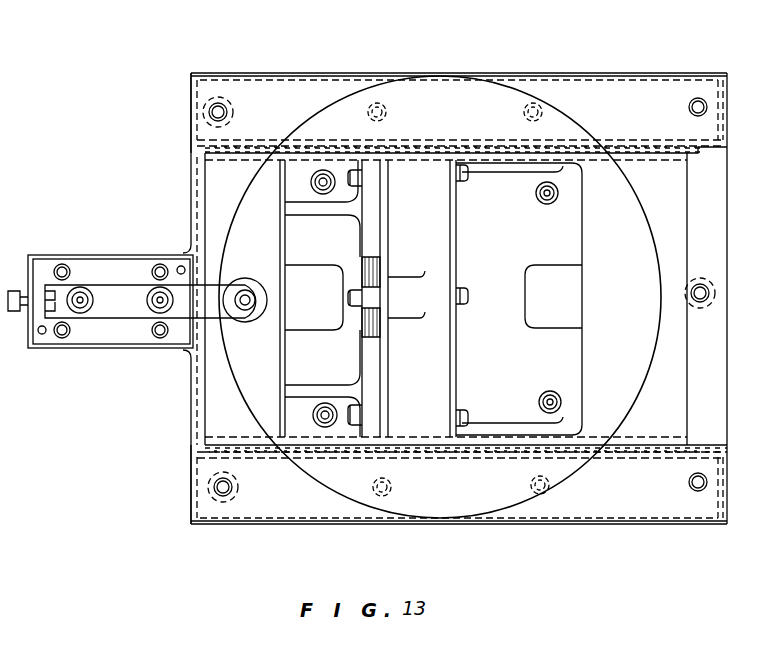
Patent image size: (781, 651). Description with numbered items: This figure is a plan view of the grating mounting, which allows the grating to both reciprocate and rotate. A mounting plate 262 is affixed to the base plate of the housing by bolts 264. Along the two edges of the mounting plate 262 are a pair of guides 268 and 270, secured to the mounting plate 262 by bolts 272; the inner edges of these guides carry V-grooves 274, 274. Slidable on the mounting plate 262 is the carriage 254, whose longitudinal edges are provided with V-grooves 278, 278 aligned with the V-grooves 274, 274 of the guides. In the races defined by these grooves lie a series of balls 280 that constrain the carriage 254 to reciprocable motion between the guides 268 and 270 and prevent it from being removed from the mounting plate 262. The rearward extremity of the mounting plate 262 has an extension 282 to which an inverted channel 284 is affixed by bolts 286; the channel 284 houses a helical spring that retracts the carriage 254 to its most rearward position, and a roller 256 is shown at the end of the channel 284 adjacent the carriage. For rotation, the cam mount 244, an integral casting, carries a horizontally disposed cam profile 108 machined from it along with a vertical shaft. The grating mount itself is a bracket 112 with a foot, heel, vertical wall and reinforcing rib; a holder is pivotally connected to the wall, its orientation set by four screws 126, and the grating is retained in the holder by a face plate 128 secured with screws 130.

The cam profile 108 is at (262, 348).
The bracket 112 is at (362, 357).
The screws 126 is at (356, 186).
The face plate 128 is at (457, 362).
The screws 130 is at (468, 175).
The cam mount 244 is at (616, 280).
The carriage 254 is at (212, 190).
The roller 256 is at (244, 278).
The mounting plate 262 is at (191, 406).
The bolts 264 is at (230, 110).
The guide 268 is at (600, 512).
The guide 270 is at (632, 82).
The bolts 272 is at (699, 98).
The V-grooves 274 is at (633, 146).
The V-grooves 278 is at (642, 160).
The balls 280 is at (592, 160).
The extension 282 is at (60, 352).
The inverted channel 284 is at (120, 268).
The bolts 286 is at (62, 264).